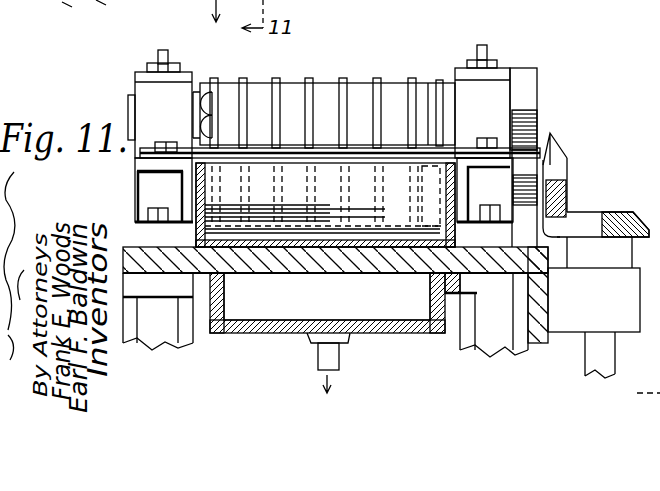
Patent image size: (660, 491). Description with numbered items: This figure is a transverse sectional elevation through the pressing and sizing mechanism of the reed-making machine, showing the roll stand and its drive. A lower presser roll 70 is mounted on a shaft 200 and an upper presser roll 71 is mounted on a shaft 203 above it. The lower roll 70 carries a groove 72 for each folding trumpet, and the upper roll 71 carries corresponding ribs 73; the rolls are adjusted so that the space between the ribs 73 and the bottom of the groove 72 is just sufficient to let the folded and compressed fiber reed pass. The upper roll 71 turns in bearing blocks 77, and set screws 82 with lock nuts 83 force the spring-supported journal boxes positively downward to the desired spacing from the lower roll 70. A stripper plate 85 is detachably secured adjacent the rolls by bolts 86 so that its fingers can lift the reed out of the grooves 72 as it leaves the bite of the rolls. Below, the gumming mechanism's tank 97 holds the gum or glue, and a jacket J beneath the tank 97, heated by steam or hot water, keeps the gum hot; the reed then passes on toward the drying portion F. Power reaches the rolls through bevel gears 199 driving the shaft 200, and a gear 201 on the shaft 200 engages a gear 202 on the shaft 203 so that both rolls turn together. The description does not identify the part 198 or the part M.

The lower presser roll 70 is at (357, 200).
The upper presser roll 71 is at (290, 90).
The groove 72 is at (407, 224).
The ribs 73 is at (344, 80).
The bearing blocks 77 is at (461, 98).
The set screws 82 is at (169, 57).
The lock nuts 83 is at (181, 67).
The stripper plate 85 is at (324, 158).
The bolts 86 is at (164, 142).
The tank 97 is at (293, 250).
The pipe 198 is at (600, 352).
The bevel gears 199 is at (570, 197).
The shaft 200 is at (572, 180).
The gear 201 is at (563, 157).
The gear 202 is at (521, 78).
The shaft 203 is at (128, 118).
The element M is at (72, 1).
The drying portion F is at (180, 359).
The jacket J is at (398, 312).